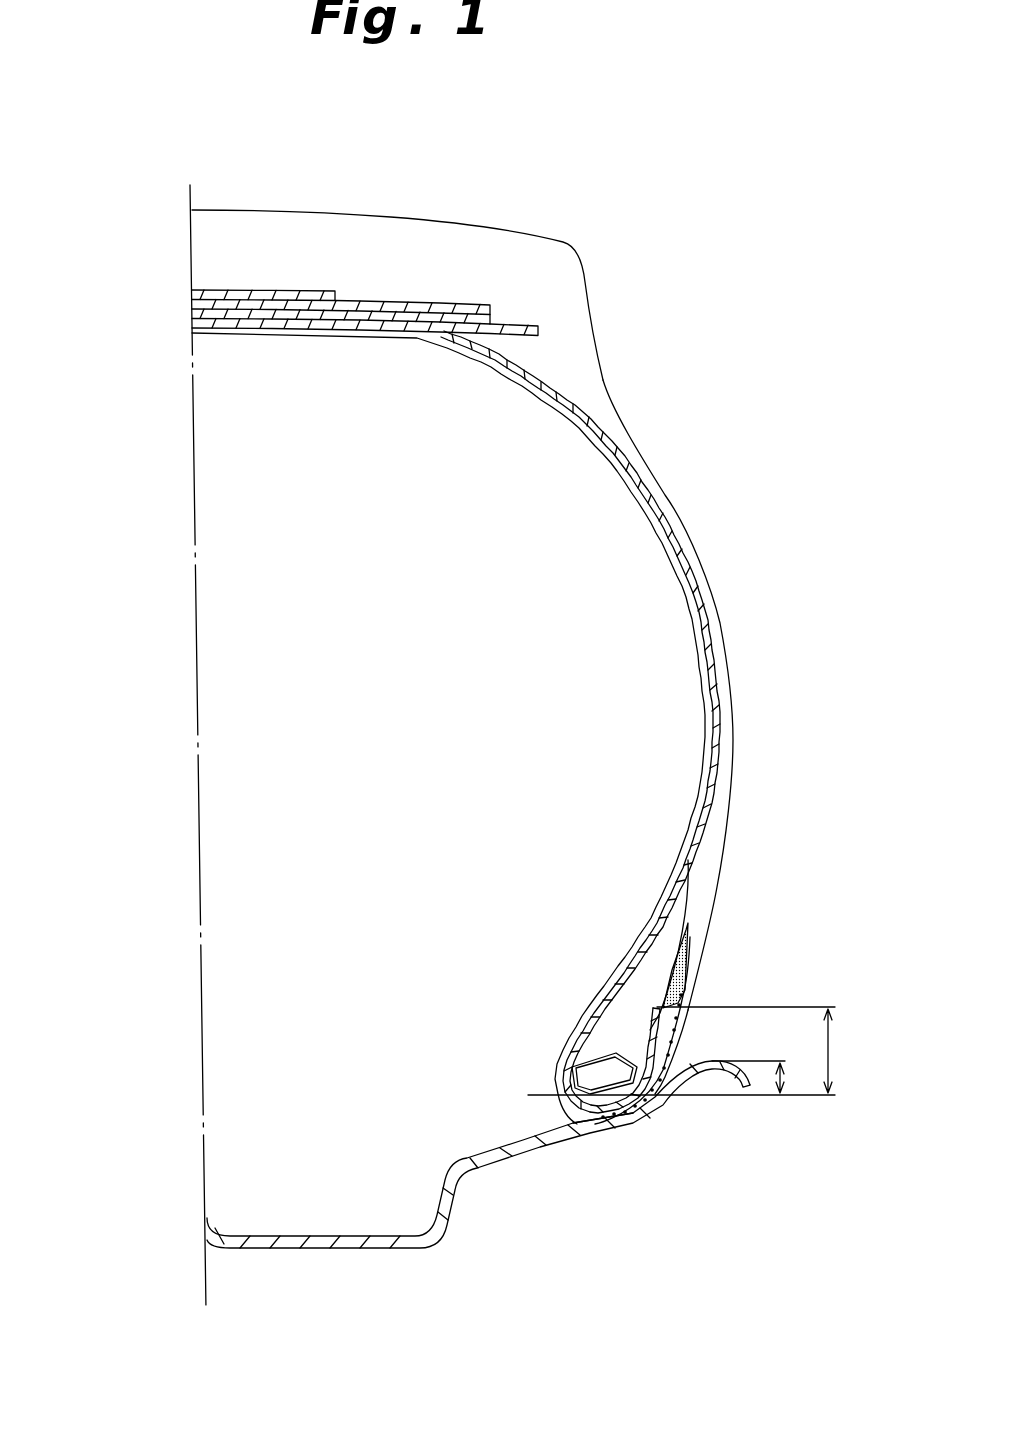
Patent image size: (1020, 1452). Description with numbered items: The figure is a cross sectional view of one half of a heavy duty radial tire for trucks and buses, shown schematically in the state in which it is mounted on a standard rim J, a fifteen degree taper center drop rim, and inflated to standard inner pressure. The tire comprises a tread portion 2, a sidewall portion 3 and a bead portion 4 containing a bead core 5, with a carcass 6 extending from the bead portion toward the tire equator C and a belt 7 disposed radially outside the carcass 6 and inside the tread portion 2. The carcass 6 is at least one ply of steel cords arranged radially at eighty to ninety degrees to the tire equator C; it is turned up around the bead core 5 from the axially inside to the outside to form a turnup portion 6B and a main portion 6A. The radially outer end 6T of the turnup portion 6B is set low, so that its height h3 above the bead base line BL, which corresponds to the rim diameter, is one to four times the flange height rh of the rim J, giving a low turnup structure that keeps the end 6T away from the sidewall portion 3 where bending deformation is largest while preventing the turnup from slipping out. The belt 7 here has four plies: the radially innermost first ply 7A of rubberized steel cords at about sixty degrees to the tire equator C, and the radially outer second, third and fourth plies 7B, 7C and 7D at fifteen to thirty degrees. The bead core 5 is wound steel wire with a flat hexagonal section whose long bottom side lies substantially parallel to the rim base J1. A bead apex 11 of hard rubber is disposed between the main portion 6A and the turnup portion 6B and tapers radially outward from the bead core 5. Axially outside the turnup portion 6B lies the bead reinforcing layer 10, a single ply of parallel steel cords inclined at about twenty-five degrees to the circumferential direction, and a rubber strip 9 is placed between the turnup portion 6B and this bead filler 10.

The tread portion 2 is at (371, 198).
The sidewall portion 3 is at (712, 522).
The bead portion 4 is at (715, 990).
The bead core 5 is at (587, 1073).
The carcass 6 is at (548, 823).
The carcass main portion 6A is at (688, 835).
The turnup portion 6B is at (646, 1072).
The radially outer end of the turnup portion 6T is at (678, 992).
The belt 7 is at (62, 235).
The first ply 7A is at (193, 318).
The second ply 7B is at (193, 306).
The third ply 7C is at (193, 298).
The fourth ply 7D is at (193, 295).
The rubber strip 9 is at (690, 935).
The bead reinforcing layer 10 is at (686, 1032).
The bead apex 11 is at (603, 1025).
The standard rim J is at (375, 1248).
The rim base J1 is at (573, 1130).
The bead base line BL is at (693, 1100).
The tire equator C is at (210, 1277).
The flange height rh is at (787, 1095).
The turnup height h3 is at (835, 1060).